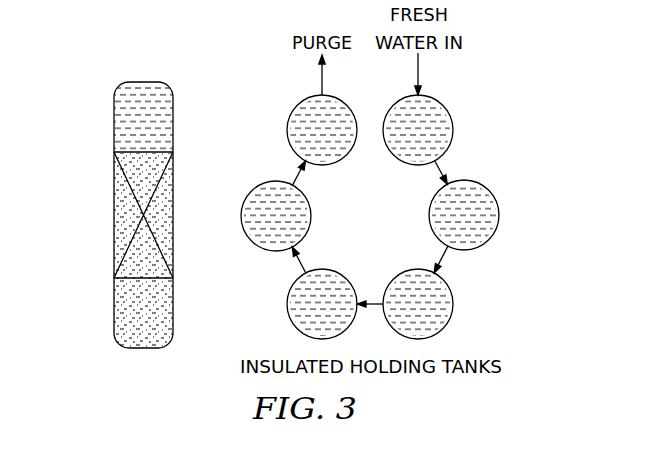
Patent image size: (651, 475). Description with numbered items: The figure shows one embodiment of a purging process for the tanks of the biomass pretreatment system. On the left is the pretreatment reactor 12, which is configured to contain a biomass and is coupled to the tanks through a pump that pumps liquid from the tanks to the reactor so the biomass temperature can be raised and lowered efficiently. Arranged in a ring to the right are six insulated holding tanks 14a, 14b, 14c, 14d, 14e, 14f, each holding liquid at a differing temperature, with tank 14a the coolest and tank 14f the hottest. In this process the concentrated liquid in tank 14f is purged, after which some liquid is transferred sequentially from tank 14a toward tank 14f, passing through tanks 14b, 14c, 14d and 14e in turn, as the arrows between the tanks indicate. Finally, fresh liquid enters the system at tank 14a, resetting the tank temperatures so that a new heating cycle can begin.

The pretreatment reactor 12 is at (113, 195).
The tank 14a is at (447, 110).
The tank 14b is at (495, 196).
The tank 14c is at (451, 317).
The tank 14d is at (289, 317).
The tank 14e is at (244, 200).
The tank 14f is at (293, 110).